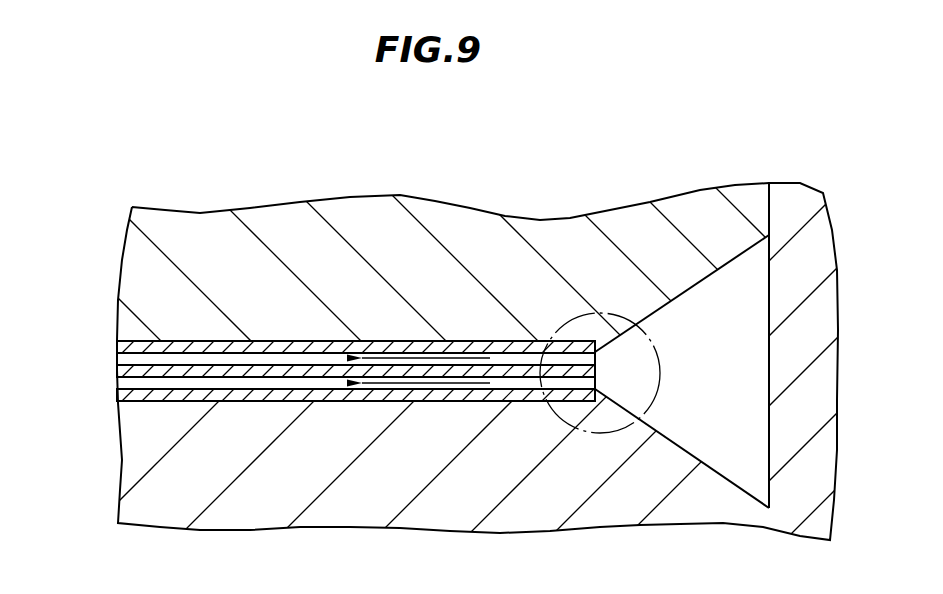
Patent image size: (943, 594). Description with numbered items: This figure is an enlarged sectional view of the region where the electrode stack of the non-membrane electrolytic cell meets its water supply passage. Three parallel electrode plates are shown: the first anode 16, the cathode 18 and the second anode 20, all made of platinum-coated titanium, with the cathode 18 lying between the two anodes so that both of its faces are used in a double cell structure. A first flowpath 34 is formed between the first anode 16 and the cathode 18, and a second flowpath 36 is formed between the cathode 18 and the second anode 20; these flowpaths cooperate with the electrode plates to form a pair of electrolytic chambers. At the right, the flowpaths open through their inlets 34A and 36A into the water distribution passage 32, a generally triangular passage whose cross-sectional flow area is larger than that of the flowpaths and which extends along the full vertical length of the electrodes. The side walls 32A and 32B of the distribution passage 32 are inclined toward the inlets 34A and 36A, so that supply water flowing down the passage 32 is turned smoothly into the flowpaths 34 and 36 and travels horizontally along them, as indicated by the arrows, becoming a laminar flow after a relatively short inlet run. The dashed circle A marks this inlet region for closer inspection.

The first anode 16 is at (145, 397).
The cathode 18 is at (125, 372).
The second anode 20 is at (143, 342).
The water distribution passage 32 is at (740, 377).
The side wall of the distribution path 32A is at (637, 415).
The side wall of the distribution path 32B is at (690, 288).
The first flowpath 34 is at (313, 383).
The inlet of the first flowpath 34A is at (565, 385).
The second flowpath 36 is at (332, 357).
The inlet of the second flowpath 36A is at (598, 348).
The region A is at (570, 317).